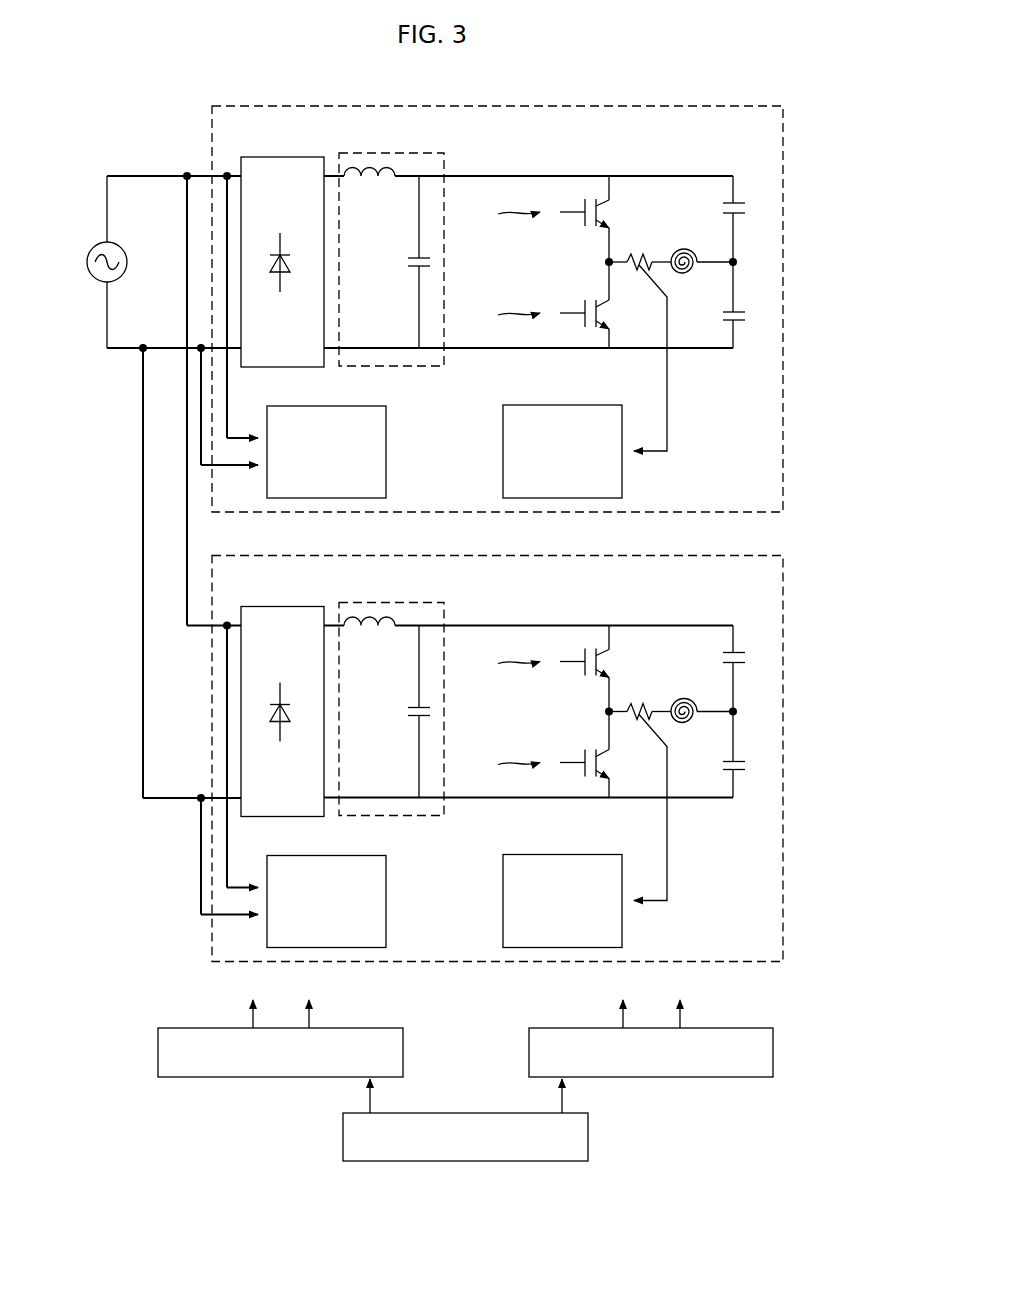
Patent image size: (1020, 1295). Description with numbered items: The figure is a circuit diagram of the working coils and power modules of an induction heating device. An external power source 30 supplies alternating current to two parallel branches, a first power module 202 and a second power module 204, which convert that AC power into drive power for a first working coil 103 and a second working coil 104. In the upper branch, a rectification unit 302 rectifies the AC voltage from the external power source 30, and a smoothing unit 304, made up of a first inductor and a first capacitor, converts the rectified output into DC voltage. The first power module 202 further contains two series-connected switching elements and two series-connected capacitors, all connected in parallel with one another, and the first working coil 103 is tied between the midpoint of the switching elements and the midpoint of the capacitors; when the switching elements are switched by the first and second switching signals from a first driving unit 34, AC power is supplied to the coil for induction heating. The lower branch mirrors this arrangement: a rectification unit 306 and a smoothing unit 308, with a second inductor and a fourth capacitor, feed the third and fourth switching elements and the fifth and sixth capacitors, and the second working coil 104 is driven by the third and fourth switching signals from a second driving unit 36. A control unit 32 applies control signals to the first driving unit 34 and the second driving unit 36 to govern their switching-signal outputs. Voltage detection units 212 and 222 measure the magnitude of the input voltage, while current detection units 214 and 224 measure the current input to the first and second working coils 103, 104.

The external power source 30 is at (120, 246).
The first power module 202 is at (720, 106).
The second power module 204 is at (497, 745).
The rectification unit 302 is at (286, 156).
The smoothing unit 304 is at (420, 153).
The rectification unit 306 is at (291, 697).
The smoothing unit 308 is at (406, 696).
The first working coil 103 is at (686, 249).
The second working coil 104 is at (686, 699).
The voltage detection unit 212 is at (349, 406).
The current detection unit 214 is at (585, 405).
The voltage detection unit 222 is at (335, 886).
The current detection unit 224 is at (572, 886).
The first driving unit 34 is at (358, 1028).
The second driving unit 36 is at (730, 1028).
The control unit 32 is at (577, 1112).